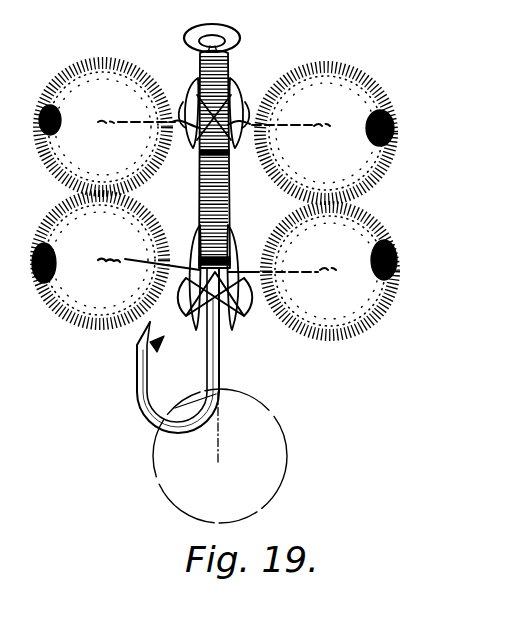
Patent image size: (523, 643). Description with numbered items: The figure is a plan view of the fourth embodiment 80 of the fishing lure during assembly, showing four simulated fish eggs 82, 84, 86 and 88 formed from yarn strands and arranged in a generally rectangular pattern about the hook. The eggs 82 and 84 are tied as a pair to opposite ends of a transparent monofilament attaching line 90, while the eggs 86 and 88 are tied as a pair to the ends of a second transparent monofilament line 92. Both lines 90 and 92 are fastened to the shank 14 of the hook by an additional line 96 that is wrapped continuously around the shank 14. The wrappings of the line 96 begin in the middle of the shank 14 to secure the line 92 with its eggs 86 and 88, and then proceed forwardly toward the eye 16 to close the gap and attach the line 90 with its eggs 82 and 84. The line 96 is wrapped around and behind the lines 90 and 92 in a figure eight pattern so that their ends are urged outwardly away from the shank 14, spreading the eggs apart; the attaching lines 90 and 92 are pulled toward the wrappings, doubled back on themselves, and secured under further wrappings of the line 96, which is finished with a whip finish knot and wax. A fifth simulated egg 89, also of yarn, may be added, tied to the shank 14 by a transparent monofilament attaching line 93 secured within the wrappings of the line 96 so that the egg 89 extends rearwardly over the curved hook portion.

The fourth embodiment of the fishing lure 80 is at (173, 44).
The eye 16 is at (228, 33).
The additional line 96 is at (229, 189).
The transparent monofilament attaching line 90 is at (238, 127).
The transparent monofilament line 92 is at (247, 277).
The shank 14 is at (218, 372).
The transparent monofilament attaching line 93 is at (222, 420).
The fifth simulated egg 89 is at (268, 455).
The simulated fish egg 82 is at (109, 97).
The simulated fish egg 84 is at (330, 101).
The simulated fish egg 86 is at (114, 307).
The simulated fish egg 88 is at (348, 308).